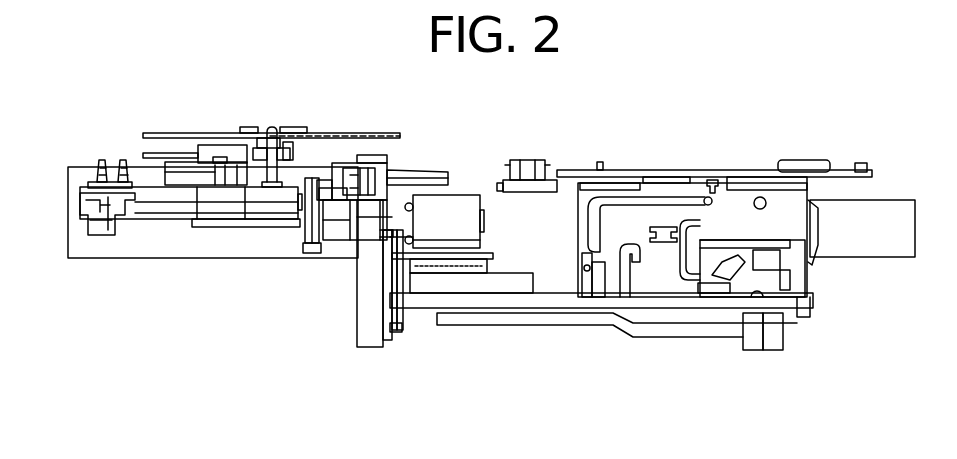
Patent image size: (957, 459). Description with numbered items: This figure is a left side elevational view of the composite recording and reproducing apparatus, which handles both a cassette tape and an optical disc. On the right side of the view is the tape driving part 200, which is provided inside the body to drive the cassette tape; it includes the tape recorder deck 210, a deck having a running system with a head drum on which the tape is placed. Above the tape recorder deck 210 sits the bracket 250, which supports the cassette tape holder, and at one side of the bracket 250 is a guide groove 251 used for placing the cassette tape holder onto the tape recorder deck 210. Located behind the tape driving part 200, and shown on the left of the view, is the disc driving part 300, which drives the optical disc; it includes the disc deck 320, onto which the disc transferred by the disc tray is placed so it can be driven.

The tape driving part 200 is at (517, 341).
The tape recorder deck 210 is at (664, 300).
The bracket 250 is at (743, 205).
The guide groove 251 is at (647, 203).
The disc driving part 300 is at (227, 124).
The disc deck 320 is at (231, 262).